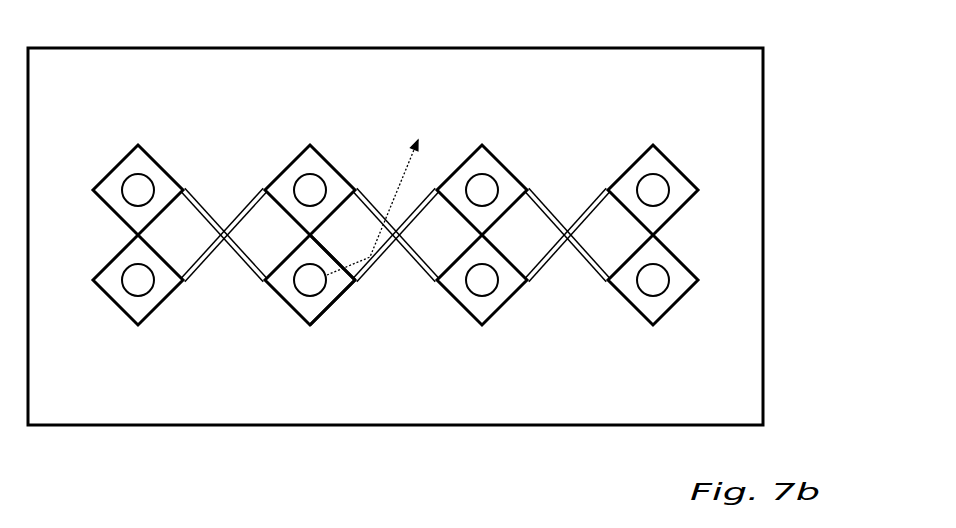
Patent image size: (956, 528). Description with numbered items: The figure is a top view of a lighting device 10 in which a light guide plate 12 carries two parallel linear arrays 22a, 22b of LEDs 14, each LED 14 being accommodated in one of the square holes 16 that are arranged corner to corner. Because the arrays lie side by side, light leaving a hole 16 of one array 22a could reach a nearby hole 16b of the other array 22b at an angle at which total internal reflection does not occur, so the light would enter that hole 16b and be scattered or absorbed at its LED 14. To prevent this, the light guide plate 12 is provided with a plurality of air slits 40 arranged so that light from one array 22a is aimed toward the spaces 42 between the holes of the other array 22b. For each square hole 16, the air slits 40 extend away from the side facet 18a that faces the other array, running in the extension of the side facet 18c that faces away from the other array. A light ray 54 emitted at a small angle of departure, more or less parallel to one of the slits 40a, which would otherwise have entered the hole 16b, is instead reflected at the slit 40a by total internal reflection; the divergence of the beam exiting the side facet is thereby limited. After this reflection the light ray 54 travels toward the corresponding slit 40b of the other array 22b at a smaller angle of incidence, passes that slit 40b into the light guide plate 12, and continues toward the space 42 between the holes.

The lighting device 10 is at (797, 312).
The light guide plate 12 is at (740, 337).
The LEDs 14 is at (143, 283).
The square holes 16 is at (110, 282).
The hole 16b is at (497, 173).
The side facet 18a is at (327, 247).
The side facet 18c is at (330, 307).
The linear array 22a is at (408, 248).
The linear array 22b is at (427, 182).
The air slits 40 is at (195, 270).
The slit 40a is at (382, 262).
The slit 40b is at (373, 196).
The spaces 42 is at (238, 192).
The light ray 54 is at (384, 186).